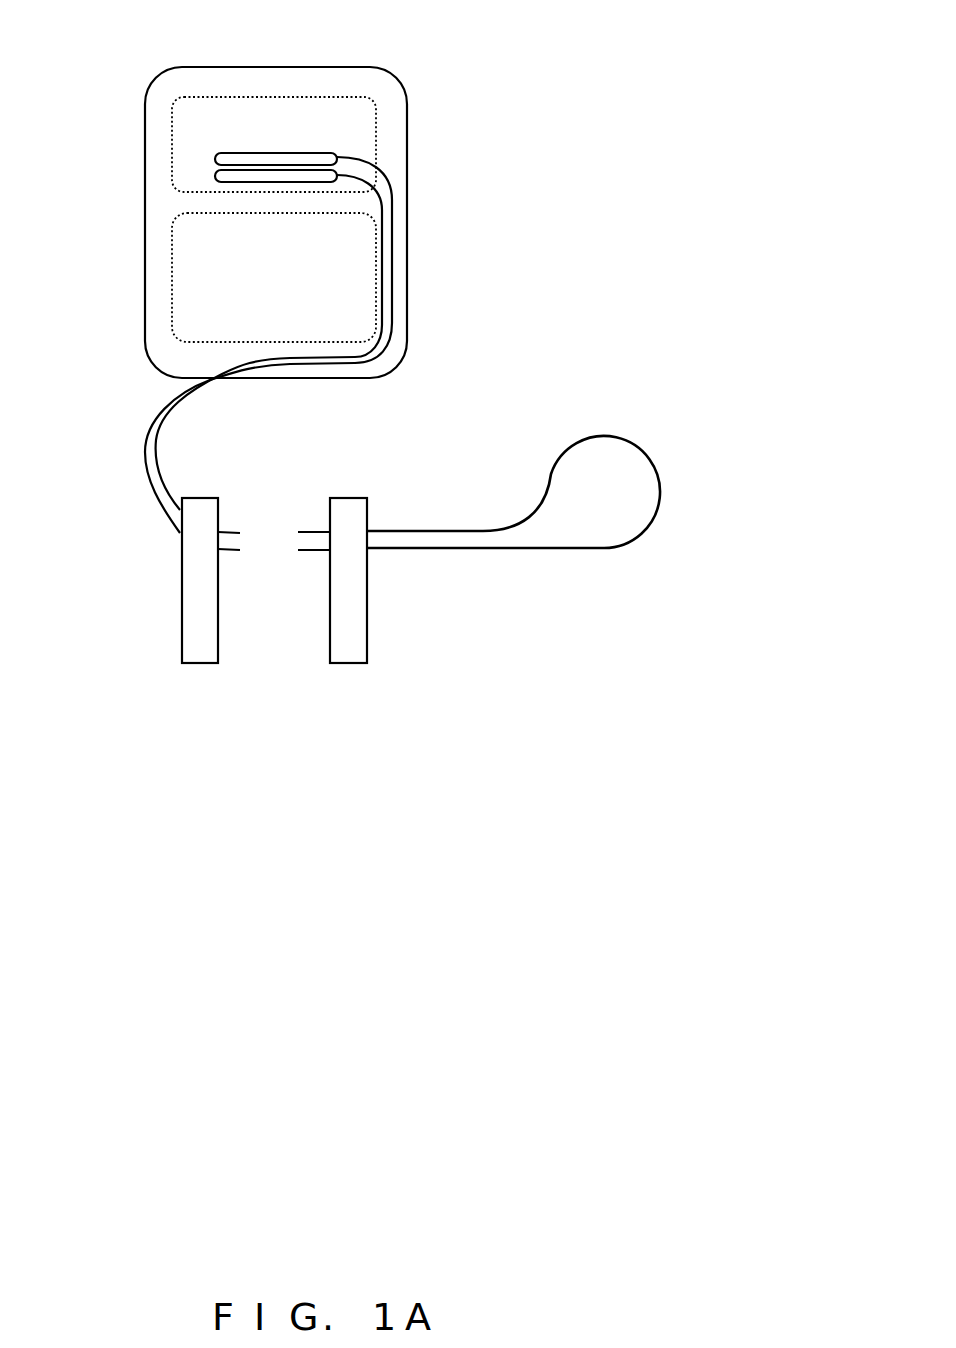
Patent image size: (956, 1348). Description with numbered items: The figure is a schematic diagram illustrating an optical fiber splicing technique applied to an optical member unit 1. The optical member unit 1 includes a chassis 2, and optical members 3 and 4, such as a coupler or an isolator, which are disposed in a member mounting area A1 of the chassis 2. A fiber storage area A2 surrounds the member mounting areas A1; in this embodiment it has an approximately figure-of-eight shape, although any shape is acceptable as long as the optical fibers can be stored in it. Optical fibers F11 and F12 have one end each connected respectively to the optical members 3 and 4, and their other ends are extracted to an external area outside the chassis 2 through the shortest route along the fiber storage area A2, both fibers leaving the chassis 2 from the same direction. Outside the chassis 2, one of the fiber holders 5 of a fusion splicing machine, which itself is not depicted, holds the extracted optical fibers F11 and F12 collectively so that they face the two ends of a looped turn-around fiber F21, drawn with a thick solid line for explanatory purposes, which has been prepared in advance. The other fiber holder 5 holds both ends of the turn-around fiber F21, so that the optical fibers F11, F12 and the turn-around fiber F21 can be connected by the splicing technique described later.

The optical member unit 1 is at (425, 100).
The chassis 2 is at (232, 67).
The optical member 3 is at (215, 157).
The optical member 4 is at (215, 177).
The fiber holder 5 is at (352, 654).
The member mounting area A1 is at (183, 185).
The fiber storage area A2 is at (158, 300).
The optical fiber F11 is at (393, 208).
The optical fiber F12 is at (385, 252).
The turn-around fiber F21 is at (445, 529).